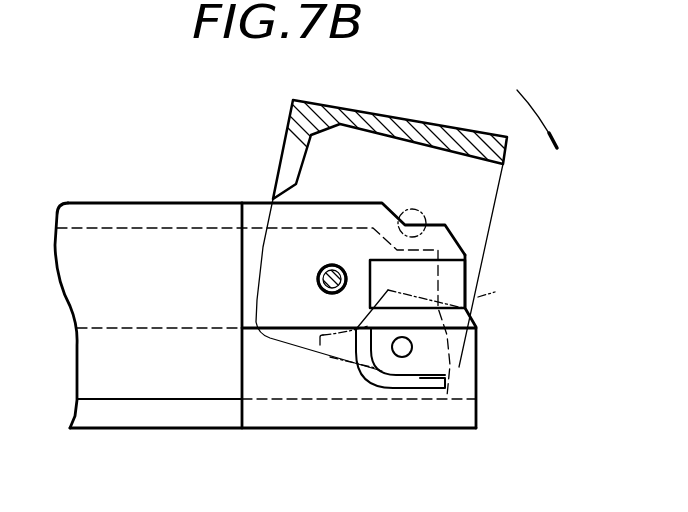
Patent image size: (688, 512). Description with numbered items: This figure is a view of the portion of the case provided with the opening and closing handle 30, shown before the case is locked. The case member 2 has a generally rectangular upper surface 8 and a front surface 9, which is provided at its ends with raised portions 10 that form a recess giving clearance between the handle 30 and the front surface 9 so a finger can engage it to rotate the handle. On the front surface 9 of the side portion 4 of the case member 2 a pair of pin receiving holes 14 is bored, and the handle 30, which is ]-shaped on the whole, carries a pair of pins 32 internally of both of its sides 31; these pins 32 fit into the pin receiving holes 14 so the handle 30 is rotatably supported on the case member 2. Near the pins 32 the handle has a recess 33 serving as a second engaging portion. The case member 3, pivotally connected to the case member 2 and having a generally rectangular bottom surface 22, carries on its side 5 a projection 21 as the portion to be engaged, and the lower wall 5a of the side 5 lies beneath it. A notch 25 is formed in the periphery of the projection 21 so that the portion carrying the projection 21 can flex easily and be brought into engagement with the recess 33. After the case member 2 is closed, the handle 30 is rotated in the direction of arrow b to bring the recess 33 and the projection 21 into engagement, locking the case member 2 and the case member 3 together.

The case member 2 is at (178, 203).
The case member 3 is at (311, 428).
The side portion 4 is at (133, 238).
The side 5 is at (347, 383).
The lower wall of body portion 5a is at (133, 378).
The upper surface 8 is at (86, 203).
The front surface 9 is at (466, 268).
The raised portions 10 is at (476, 386).
The pin receiving holes 14 is at (318, 284).
The projection 21 is at (405, 347).
The bottom surface 22 is at (285, 394).
The notch 25 is at (411, 391).
The opening and closing handle 30 is at (411, 120).
The sides 31 is at (332, 157).
The pins 32 is at (319, 278).
The recess 33 is at (426, 214).
The arrow b is at (533, 107).